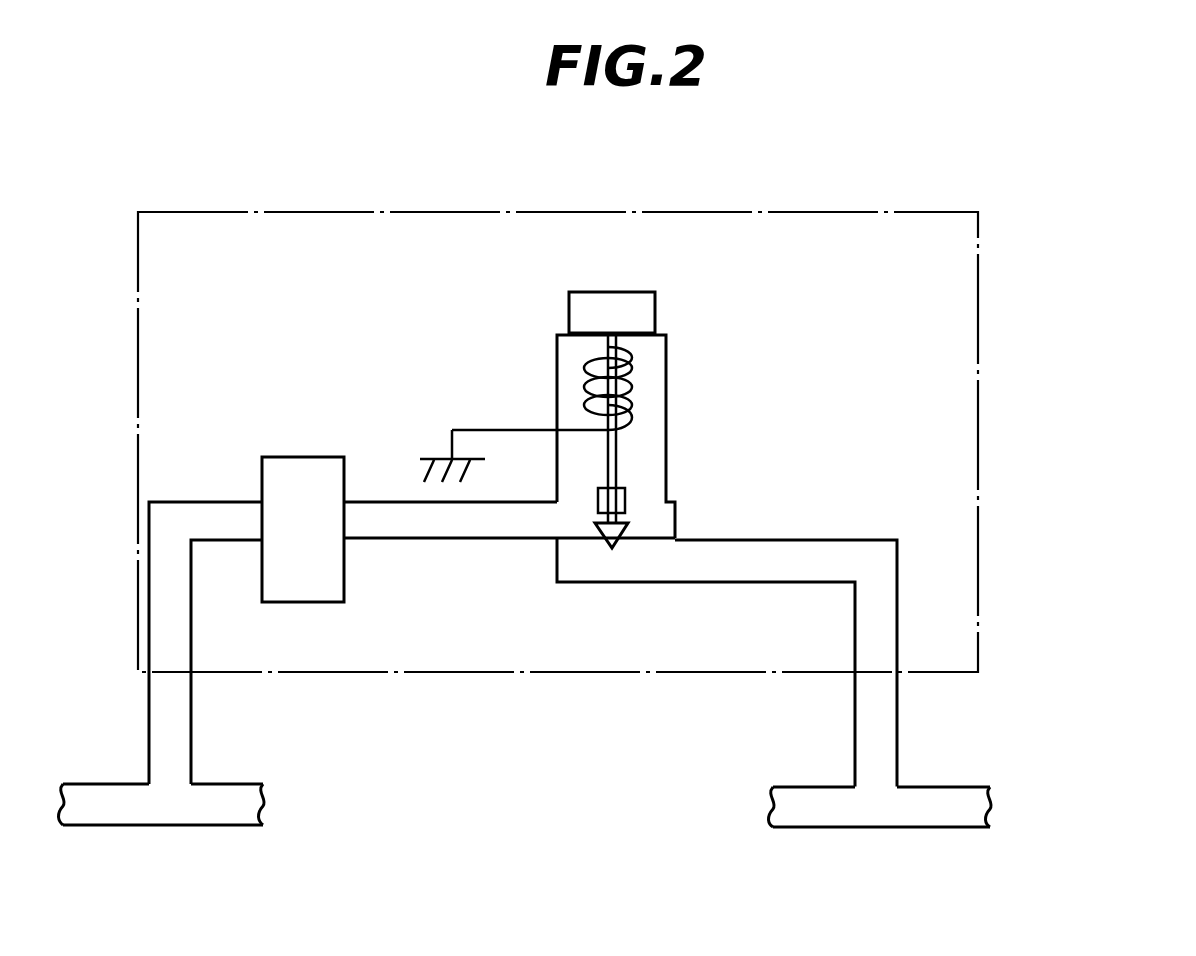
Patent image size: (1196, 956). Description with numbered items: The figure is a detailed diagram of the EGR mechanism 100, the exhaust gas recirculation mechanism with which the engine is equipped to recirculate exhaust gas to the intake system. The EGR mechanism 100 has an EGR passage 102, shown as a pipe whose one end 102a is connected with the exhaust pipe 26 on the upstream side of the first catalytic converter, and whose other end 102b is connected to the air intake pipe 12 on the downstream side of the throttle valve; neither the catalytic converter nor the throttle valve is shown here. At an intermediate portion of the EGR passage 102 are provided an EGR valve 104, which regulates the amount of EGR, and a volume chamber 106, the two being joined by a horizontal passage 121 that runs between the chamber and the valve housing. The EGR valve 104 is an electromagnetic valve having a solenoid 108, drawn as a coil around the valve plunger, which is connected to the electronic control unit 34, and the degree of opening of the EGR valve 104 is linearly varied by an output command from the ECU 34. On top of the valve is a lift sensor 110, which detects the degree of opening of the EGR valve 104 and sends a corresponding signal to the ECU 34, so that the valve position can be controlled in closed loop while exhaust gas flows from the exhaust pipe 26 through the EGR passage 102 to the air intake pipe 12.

The EGR mechanism 100 is at (484, 212).
The electronic control unit 34 is at (608, 347).
The lift sensor 110 is at (627, 292).
The EGR valve 104 is at (668, 447).
The solenoid 108 is at (666, 385).
The volume chamber 106 is at (311, 457).
The passage 121 is at (465, 527).
The EGR passage 102 is at (888, 566).
The one end of EGR passage 102a is at (870, 780).
The other end of EGR passage 102b is at (168, 784).
The air intake pipe 12 is at (225, 782).
The exhaust pipe 26 is at (970, 787).